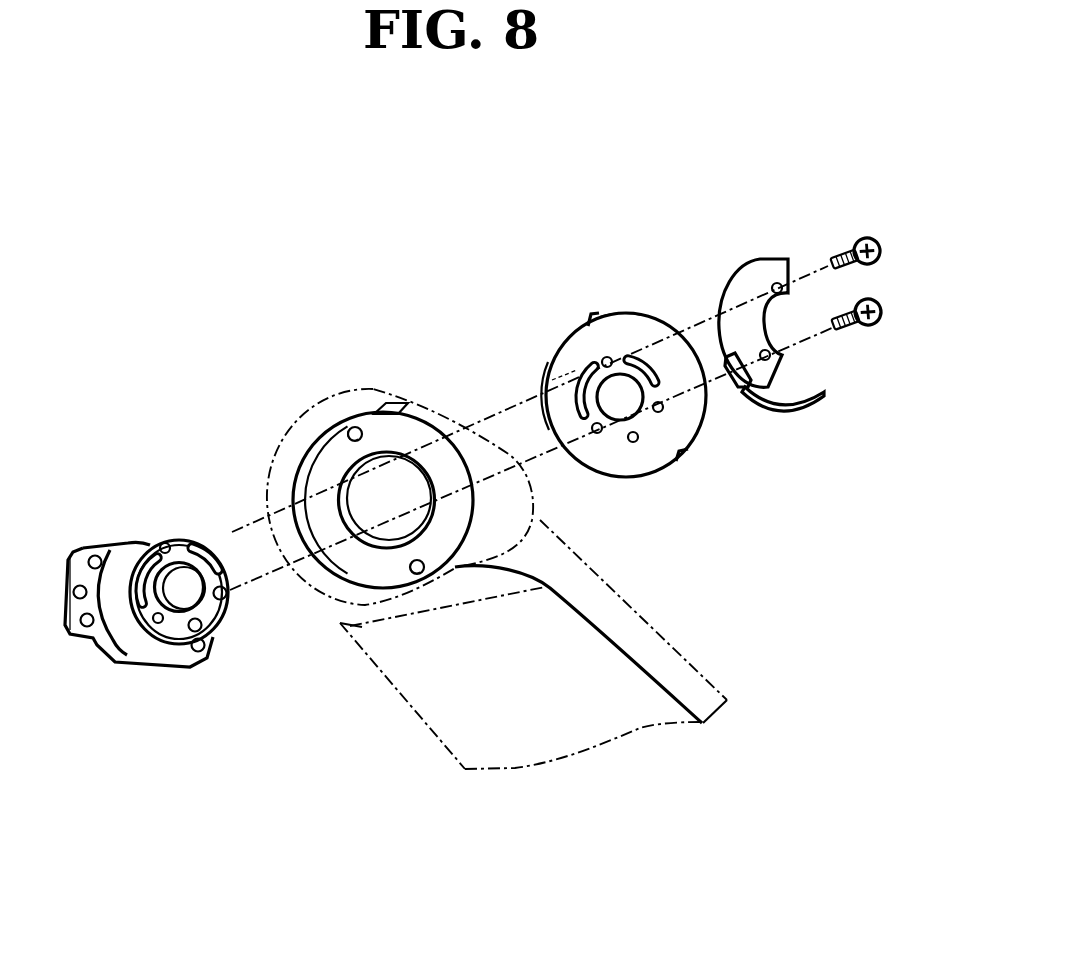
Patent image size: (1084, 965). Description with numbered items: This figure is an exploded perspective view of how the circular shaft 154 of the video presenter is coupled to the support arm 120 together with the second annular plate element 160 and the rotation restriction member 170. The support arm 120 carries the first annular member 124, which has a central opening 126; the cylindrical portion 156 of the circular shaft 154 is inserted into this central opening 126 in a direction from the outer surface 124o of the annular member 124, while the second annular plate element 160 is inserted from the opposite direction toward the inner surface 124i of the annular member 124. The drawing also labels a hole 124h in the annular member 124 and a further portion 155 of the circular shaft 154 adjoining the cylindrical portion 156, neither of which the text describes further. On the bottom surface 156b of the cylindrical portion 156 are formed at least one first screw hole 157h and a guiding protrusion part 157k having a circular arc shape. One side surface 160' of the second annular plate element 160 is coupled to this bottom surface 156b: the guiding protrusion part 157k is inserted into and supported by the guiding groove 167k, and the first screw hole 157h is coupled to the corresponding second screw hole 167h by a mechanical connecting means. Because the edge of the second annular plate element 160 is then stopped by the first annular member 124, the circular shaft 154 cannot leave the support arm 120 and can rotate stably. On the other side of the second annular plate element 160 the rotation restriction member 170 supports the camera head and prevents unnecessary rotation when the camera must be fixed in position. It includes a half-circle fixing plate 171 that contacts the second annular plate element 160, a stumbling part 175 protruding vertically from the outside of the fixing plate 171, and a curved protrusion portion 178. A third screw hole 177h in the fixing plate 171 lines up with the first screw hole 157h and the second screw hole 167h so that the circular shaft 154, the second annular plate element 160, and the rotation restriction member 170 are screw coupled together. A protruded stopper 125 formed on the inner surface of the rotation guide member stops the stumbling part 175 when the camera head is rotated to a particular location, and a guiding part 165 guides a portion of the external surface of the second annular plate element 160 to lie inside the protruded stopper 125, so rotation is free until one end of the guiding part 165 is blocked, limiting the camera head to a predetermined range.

The support arm 120 is at (550, 753).
The first annular member 124 is at (340, 573).
The outer surface of the annular member 124o is at (300, 455).
The inner surface of the annular member 124i is at (383, 573).
The flange hole 124h is at (350, 430).
The protruded stopper 125 is at (402, 400).
The central opening 126 is at (343, 507).
The circular shaft 154 is at (173, 622).
The housing 155 is at (110, 648).
The cylindrical portion 156 is at (147, 647).
The bottom surface of the cylindrical portion 156b is at (215, 620).
The first screw hole 157h is at (167, 545).
The guiding protrusion part 157k is at (147, 543).
The second annular plate element 160 is at (658, 436).
The one side surface of the second annular plate element 160' is at (498, 378).
The guiding part 165 is at (557, 350).
The second screw hole 167h is at (634, 442).
The guiding groove 167k is at (643, 363).
The rotation restriction member 170 is at (798, 351).
The fixing plate 171 is at (758, 276).
The stumbling part 175 is at (735, 390).
The third screw hole 177h is at (778, 282).
The curved protrusion portion 178 is at (777, 403).